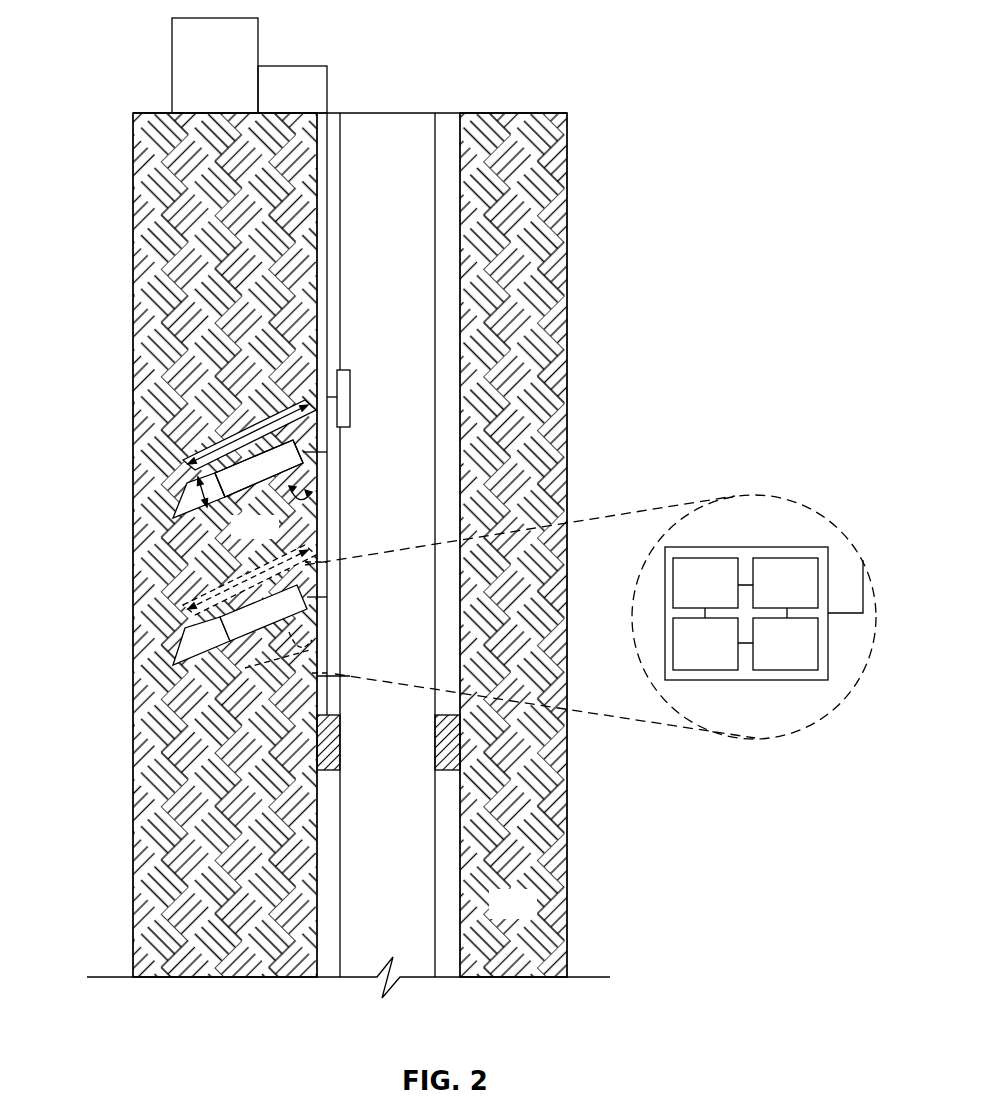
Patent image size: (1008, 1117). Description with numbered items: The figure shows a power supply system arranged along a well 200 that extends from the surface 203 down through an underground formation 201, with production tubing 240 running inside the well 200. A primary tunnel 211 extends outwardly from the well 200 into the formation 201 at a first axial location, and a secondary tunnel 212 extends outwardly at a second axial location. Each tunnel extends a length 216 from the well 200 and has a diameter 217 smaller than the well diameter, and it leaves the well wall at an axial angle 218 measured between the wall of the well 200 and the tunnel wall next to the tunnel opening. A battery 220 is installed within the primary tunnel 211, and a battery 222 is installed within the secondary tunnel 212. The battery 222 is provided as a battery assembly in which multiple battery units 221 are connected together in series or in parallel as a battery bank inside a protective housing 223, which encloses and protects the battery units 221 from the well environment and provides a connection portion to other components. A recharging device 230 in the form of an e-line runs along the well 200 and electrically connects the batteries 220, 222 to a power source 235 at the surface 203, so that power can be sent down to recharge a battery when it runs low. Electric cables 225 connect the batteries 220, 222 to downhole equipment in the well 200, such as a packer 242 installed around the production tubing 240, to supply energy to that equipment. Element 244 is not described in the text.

The well 200 is at (402, 96).
The underground formation 201 is at (492, 915).
The surface 203 is at (525, 113).
The primary tunnel 211 is at (195, 490).
The secondary tunnel 212 is at (188, 632).
The length 216 is at (290, 442).
The diameter 217 is at (188, 462).
The axial angle 218 is at (248, 487).
The battery 220 is at (222, 592).
The battery unit 221 is at (685, 595).
The battery 222 is at (318, 668).
The protective housing 223 is at (775, 547).
The electric cable 225 is at (327, 687).
The recharging device 230 is at (292, 66).
The power source 235 is at (194, 74).
The production tubing 240 is at (337, 383).
The packer 242 is at (323, 747).
The tubing string 244 is at (437, 323).